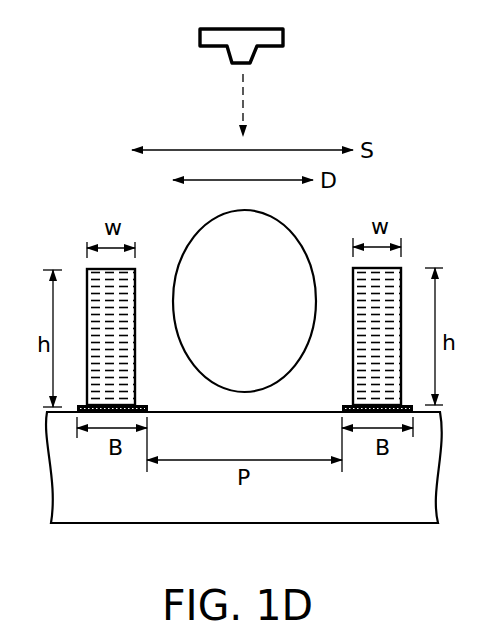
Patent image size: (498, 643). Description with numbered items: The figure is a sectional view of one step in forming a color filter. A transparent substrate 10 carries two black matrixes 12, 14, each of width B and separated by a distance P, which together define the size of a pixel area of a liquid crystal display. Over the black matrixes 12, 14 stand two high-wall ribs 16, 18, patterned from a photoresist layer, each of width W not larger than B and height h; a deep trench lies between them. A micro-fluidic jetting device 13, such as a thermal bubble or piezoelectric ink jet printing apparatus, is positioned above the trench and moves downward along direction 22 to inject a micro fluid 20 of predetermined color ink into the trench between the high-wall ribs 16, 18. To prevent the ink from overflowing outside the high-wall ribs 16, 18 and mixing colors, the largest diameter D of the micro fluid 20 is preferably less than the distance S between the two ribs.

The transparent substrate 10 is at (400, 512).
The black matrix 12 is at (142, 404).
The black matrix 14 is at (350, 404).
The high-wall rib 16 is at (401, 280).
The high-wall rib 18 is at (87, 283).
The micro fluid 20 is at (279, 299).
The micro-fluidic jetting device 13 is at (283, 36).
The direction of motion 22 is at (222, 105).